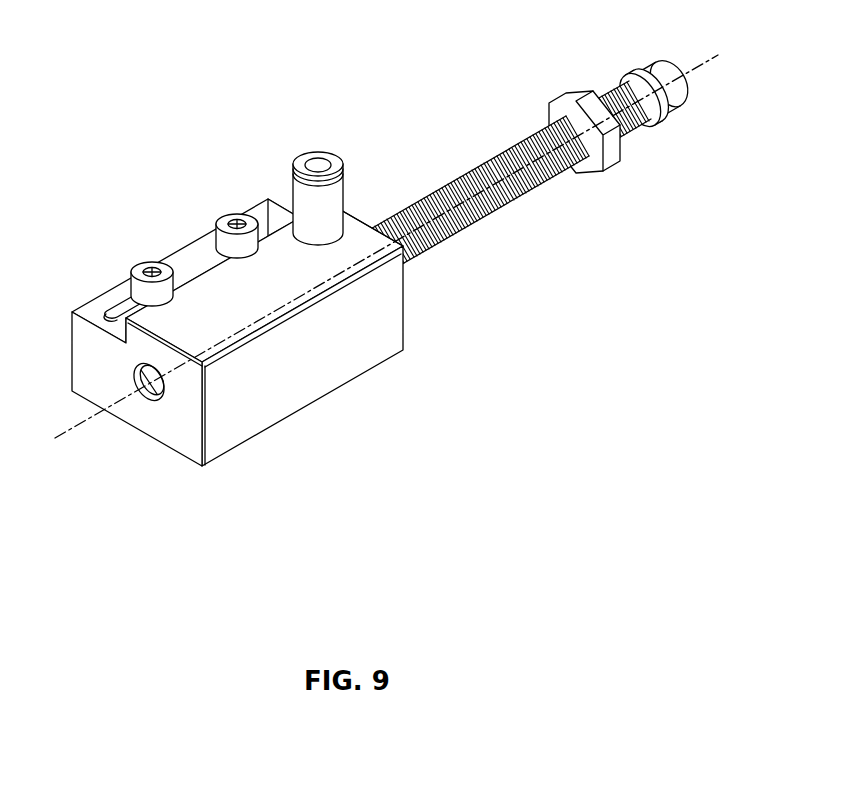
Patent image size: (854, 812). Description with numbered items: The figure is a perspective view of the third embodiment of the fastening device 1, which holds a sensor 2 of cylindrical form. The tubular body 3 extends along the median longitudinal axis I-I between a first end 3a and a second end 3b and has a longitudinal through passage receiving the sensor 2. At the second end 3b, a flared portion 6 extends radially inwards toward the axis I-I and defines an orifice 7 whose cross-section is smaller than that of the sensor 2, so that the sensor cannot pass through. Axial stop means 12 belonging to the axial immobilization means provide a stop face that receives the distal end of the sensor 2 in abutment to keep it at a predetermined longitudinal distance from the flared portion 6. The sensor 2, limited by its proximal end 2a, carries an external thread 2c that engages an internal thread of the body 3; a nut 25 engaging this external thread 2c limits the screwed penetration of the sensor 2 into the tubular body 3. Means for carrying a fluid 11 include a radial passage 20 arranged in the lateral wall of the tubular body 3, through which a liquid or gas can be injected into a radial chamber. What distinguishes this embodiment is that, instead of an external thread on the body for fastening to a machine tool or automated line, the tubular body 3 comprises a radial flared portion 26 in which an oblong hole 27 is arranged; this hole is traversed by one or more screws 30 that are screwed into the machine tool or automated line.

The fastening device 1 is at (369, 270).
The sensor 2 is at (519, 153).
The proximal end 2a is at (676, 64).
The external thread 2c is at (510, 148).
The tubular body 3 is at (211, 309).
The first end 3a is at (368, 222).
The second end 3b is at (182, 437).
The flared portion 6 is at (144, 406).
The orifice 7 is at (134, 388).
The means for carrying a fluid 11 is at (355, 150).
The axial stop means 12 is at (137, 372).
The radial passage 20 is at (318, 158).
The nut 25 is at (563, 90).
The radial flared portion 26 is at (100, 300).
The oblong hole 27 is at (197, 272).
The screw 30 is at (150, 262).
The median longitudinal axis I is at (386, 257).